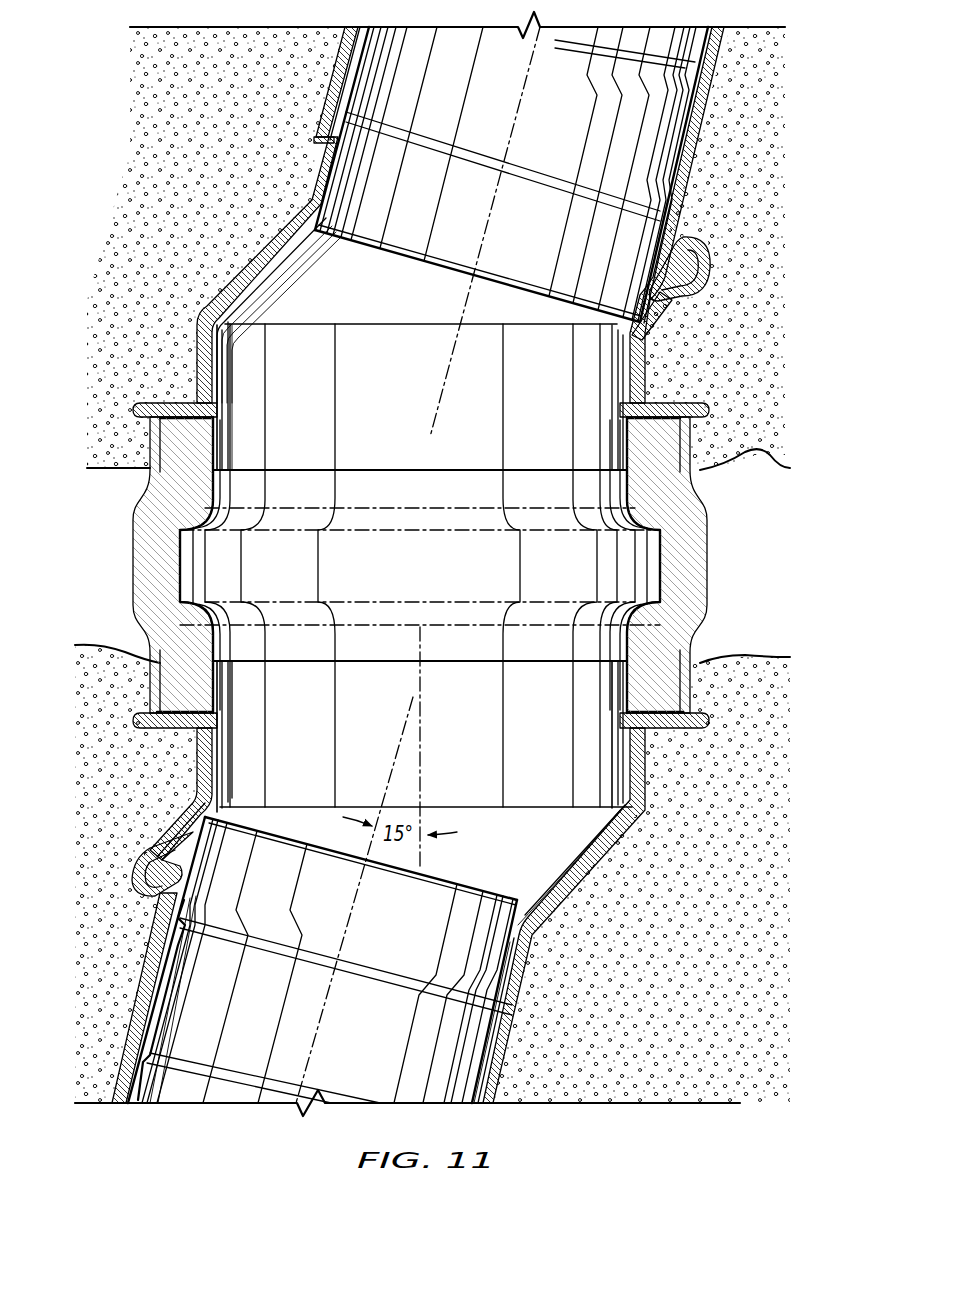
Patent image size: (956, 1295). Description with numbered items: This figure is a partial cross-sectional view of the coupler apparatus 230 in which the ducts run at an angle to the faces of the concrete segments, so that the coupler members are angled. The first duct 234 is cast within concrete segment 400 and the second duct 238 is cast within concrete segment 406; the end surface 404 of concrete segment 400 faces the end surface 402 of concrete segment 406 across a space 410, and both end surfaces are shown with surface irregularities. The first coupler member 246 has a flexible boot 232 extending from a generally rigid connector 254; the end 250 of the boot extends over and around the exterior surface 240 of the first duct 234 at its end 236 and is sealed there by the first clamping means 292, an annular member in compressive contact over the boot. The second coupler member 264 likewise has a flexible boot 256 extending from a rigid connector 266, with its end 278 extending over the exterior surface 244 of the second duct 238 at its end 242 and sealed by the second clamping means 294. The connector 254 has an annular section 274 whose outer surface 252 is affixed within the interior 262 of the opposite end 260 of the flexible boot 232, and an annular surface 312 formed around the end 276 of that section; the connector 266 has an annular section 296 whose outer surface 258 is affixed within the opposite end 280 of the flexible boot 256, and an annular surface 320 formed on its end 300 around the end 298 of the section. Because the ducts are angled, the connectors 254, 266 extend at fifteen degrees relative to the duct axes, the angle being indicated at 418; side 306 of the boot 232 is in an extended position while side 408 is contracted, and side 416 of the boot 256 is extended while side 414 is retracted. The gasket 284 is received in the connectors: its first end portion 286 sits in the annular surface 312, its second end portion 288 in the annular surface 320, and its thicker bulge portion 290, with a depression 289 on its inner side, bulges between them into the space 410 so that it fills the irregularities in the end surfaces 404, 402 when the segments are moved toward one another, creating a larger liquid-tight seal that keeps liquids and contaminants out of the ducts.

The coupler apparatus 230 is at (268, 142).
The flexible boot 232 is at (667, 320).
The first duct 234 is at (660, 143).
The end 236 is at (407, 242).
The second duct 238 is at (440, 1063).
The exterior surface 240 is at (350, 58).
The end 242 is at (405, 890).
The exterior surface 244 is at (470, 1050).
The first coupler member 246 is at (180, 320).
The end 250 is at (717, 140).
The outer surface 252 is at (617, 387).
The connector 254 is at (226, 433).
The flexible boot 256 is at (597, 885).
The outer surface 258 is at (617, 773).
The opposite end 260 is at (198, 372).
The interior 262 is at (230, 292).
The second coupler member 264 is at (117, 897).
The connector 266 is at (617, 690).
The annular section 274 is at (219, 334).
The end 276 is at (221, 402).
The end 278 is at (130, 1047).
The opposite end 280 is at (190, 807).
The gasket 284 is at (168, 545).
The first end portion 286 is at (353, 497).
The second end portion 288 is at (493, 633).
The depression 289 is at (560, 900).
The bulge portion 290 is at (438, 577).
The first clamping means 292 is at (328, 112).
The second clamping means 294 is at (510, 1043).
The annular section 296 is at (220, 773).
The end 298 is at (617, 728).
The end 300 is at (222, 728).
The side 306 is at (238, 267).
The annular surface 312 is at (224, 455).
The annular surface 320 is at (220, 683).
The concrete segment 400 is at (236, 191).
The end surface 402 is at (108, 646).
The end surface 404 is at (757, 453).
The concrete segment 406 is at (663, 996).
The side 408 is at (697, 267).
The space 410 is at (788, 577).
The side 414 is at (147, 860).
The side 416 is at (617, 853).
The vertical axis 418 is at (422, 747).